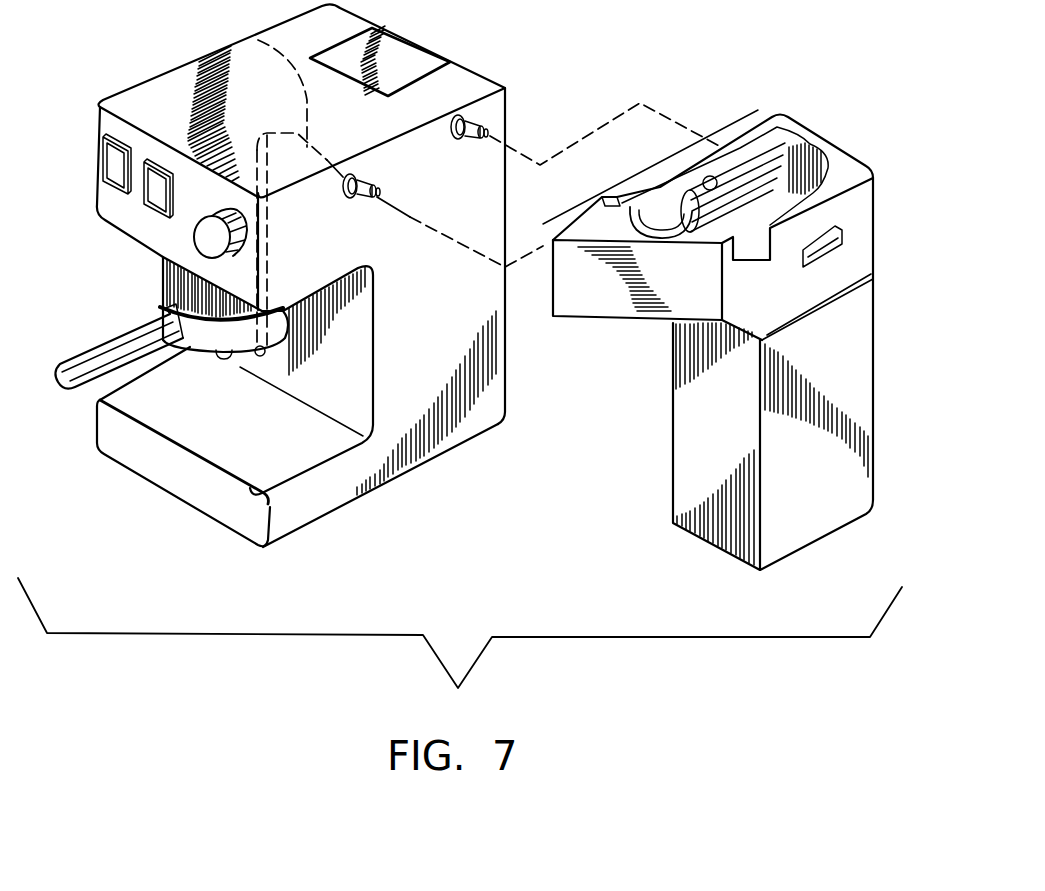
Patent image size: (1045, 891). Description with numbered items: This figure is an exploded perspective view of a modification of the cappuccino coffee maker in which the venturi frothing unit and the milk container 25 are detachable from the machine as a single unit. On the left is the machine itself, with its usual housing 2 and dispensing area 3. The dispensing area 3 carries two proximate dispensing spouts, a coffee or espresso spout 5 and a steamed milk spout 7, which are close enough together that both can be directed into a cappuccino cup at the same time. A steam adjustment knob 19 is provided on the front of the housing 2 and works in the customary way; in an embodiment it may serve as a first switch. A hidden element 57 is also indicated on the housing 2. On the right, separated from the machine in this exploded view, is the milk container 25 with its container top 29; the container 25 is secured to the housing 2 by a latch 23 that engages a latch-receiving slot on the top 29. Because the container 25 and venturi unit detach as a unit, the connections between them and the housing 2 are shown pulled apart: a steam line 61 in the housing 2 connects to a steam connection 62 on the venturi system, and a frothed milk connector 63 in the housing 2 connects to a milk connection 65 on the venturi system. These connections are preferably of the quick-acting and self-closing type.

The housing 2 is at (163, 85).
The dispensing area 3 is at (295, 455).
The coffee spout 5 is at (217, 357).
The steamed milk spout 7 is at (259, 357).
The steam adjustment knob 19 is at (208, 238).
The latch 23 is at (862, 241).
The milk container 25 is at (812, 525).
The container top 29 is at (862, 270).
The hidden channel 57 is at (253, 38).
The steam line 61 is at (475, 132).
The steam connection 62 is at (780, 143).
The frothed milk connector 63 is at (382, 192).
The milk connection 65 is at (650, 197).